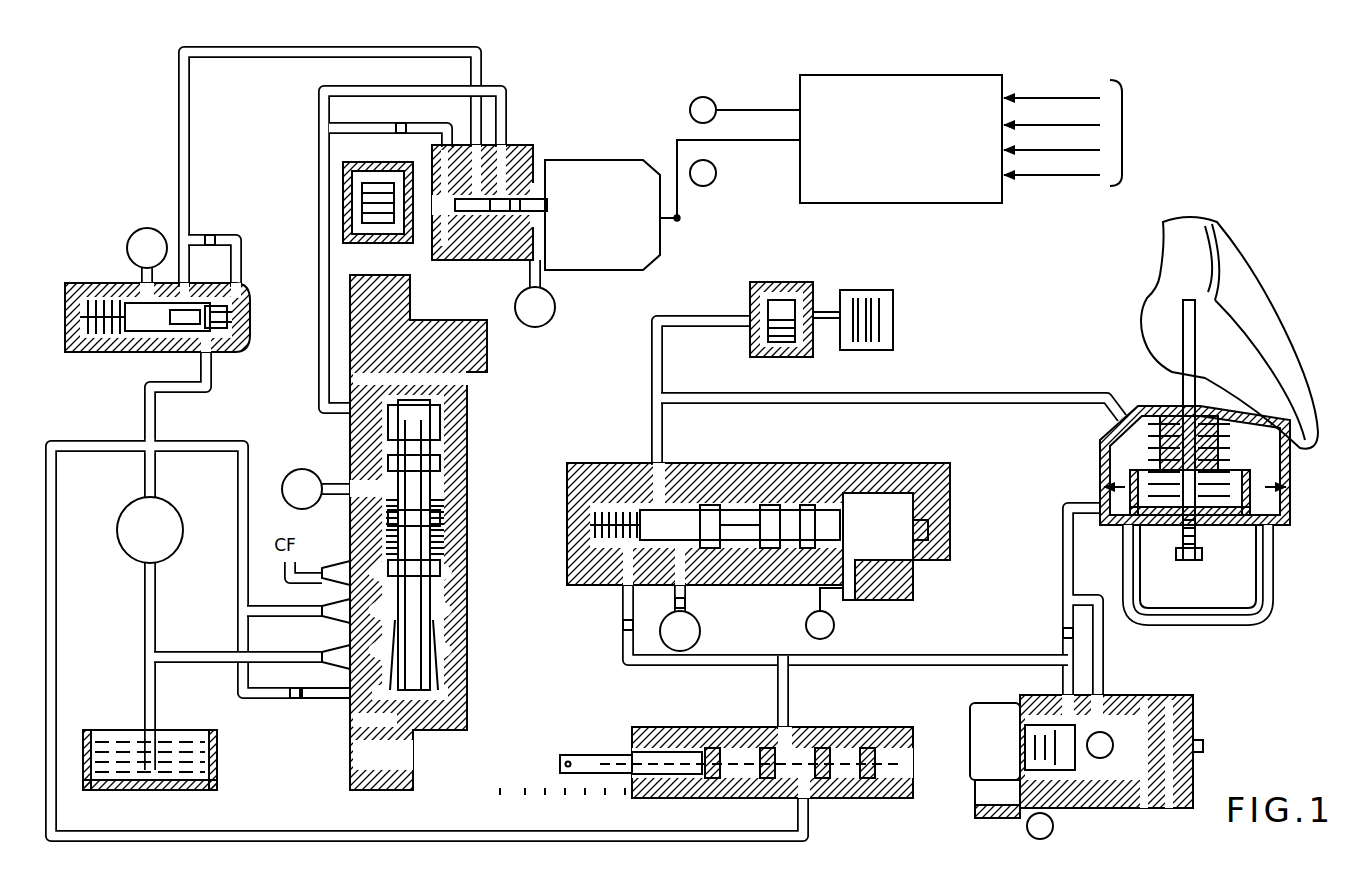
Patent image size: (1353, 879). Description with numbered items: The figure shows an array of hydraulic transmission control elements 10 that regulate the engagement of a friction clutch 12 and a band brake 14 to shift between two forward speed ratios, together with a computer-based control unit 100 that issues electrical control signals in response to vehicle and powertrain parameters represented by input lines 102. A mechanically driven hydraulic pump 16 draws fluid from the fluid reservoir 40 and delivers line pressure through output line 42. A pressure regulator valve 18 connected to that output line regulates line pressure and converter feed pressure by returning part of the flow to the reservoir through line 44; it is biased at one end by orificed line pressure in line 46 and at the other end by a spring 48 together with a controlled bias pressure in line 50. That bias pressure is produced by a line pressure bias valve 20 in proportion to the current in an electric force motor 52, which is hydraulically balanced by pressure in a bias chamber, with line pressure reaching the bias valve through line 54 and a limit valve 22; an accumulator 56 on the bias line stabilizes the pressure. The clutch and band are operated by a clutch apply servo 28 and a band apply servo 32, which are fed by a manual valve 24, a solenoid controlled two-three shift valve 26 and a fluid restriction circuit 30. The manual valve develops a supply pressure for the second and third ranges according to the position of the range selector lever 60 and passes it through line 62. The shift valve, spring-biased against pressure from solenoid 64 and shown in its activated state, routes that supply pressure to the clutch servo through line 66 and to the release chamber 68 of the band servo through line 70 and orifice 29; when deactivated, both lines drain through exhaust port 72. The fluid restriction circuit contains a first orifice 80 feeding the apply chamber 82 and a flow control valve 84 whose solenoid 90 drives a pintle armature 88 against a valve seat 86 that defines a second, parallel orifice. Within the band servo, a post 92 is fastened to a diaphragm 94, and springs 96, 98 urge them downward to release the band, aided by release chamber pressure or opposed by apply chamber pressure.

The array of hydraulic transmission control elements 10 is at (122, 150).
The friction clutch 12 is at (880, 290).
The band brake 14 is at (1185, 242).
The hydraulic pump 16 is at (124, 540).
The pressure regulator valve 18 is at (439, 532).
The line pressure bias valve 20 is at (462, 256).
The limit valve 22 is at (148, 351).
The manual valve 24 is at (703, 755).
The 2-3 shift valve 26 is at (762, 505).
The clutch apply servo 28 is at (800, 282).
The orifice 29 is at (620, 625).
The fluid restriction circuit 30 is at (1074, 735).
The band apply servo 32 is at (1226, 583).
The fluid reservoir 40 is at (85, 756).
The output line 42 is at (153, 470).
The line 44 is at (167, 660).
The line 46 is at (330, 705).
The spring 48 is at (455, 492).
The line 50 is at (322, 388).
The electric force motor 52 is at (622, 256).
The line 54 is at (305, 46).
The accumulator 56 is at (355, 241).
The transmission range selector lever 60 is at (595, 760).
The line 62 is at (930, 660).
The solenoid 64 is at (893, 503).
The line 66 is at (653, 341).
The release chamber 68 is at (1195, 465).
The line 70 is at (893, 393).
The exhaust port 72 is at (690, 607).
The first orifice 80 is at (1060, 634).
The apply chamber 82 is at (1240, 582).
The flow control valve 84 is at (1105, 790).
The valve seat 86 is at (1120, 712).
The pintle armature 88 is at (1090, 790).
The solenoid 90 is at (990, 732).
The post 92 is at (1188, 337).
The diaphragm 94 is at (1160, 525).
The spring 96 is at (1232, 450).
The spring 98 is at (1275, 518).
The control unit 100 is at (868, 85).
The input lines 102 is at (1125, 133).